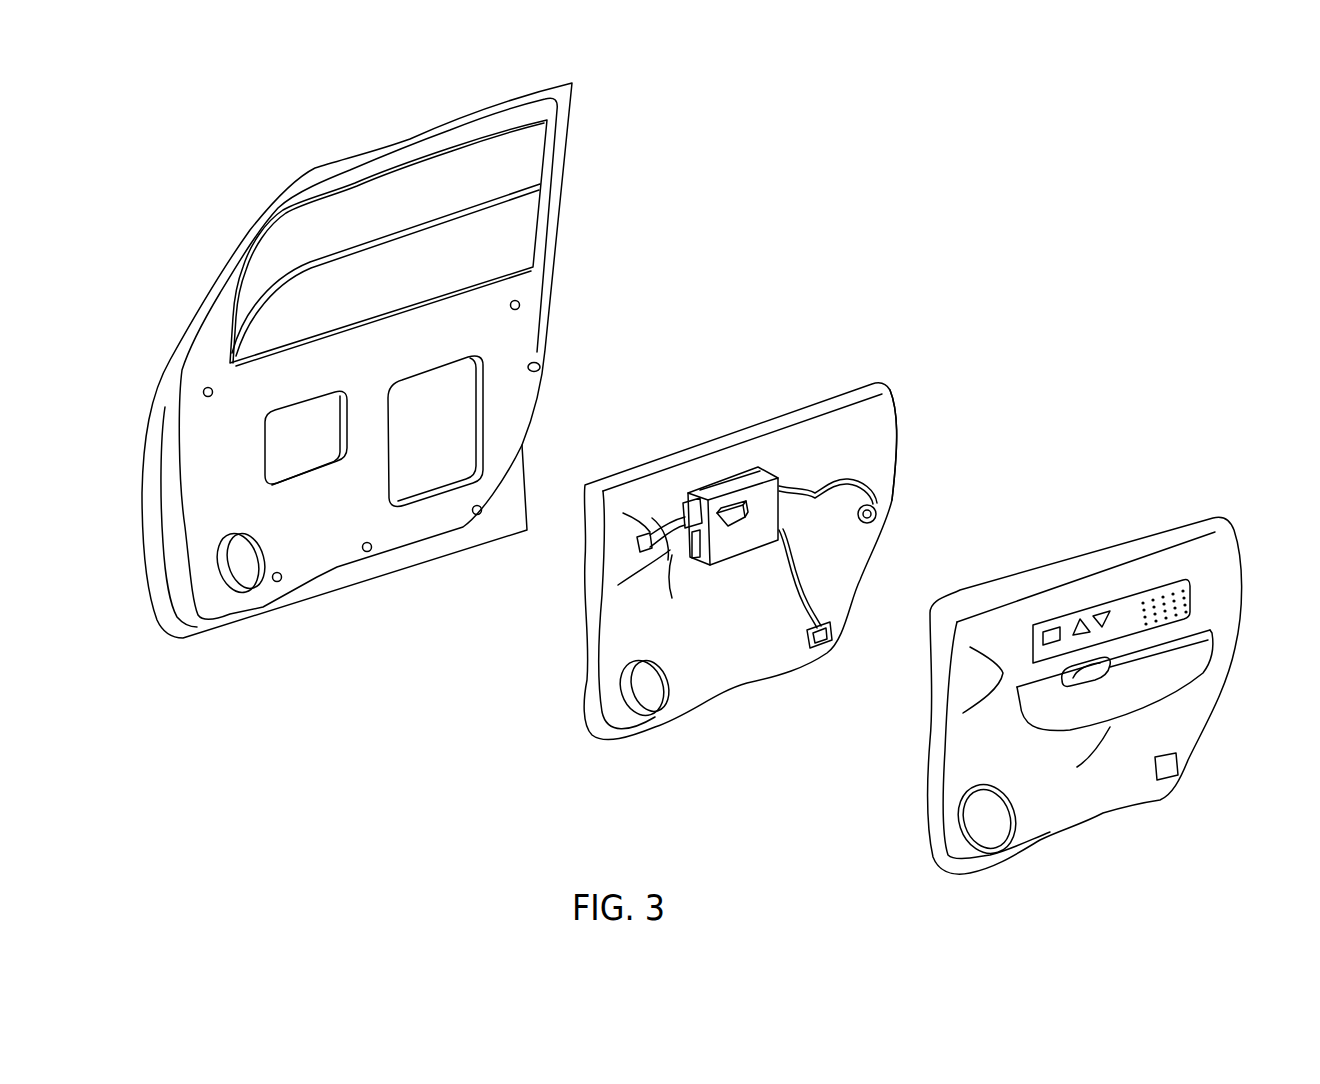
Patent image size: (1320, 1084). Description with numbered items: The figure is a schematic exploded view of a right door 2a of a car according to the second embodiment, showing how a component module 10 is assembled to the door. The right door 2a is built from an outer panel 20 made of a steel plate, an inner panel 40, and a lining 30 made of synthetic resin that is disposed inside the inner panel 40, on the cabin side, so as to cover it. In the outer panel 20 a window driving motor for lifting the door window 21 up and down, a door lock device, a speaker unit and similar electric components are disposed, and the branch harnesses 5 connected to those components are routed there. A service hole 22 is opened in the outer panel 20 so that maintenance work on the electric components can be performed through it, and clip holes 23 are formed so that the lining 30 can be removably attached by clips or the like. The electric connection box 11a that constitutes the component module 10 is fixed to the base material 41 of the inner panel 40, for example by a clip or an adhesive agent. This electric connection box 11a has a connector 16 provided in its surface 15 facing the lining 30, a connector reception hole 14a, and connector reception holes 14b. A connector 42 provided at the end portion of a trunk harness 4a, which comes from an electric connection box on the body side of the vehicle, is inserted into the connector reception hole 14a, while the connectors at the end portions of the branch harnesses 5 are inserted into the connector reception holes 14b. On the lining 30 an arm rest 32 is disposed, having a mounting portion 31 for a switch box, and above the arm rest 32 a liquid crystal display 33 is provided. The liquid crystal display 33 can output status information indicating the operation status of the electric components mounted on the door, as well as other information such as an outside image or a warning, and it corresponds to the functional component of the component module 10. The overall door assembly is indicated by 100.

The right door 2a is at (394, 768).
The trunk harness 4a is at (686, 560).
The branch harness 5 is at (852, 478).
The component module 10 is at (703, 410).
The electric connection box 11a is at (753, 472).
The connector reception hole 14a is at (684, 503).
The connector reception holes 14b is at (690, 562).
The surface 15 is at (773, 545).
The connector 16 is at (740, 528).
The outer panel 20 is at (580, 199).
The door window 21 is at (358, 242).
The service hole 22 is at (460, 443).
The clip holes 23 is at (205, 388).
The lining 30 is at (1164, 520).
The mounting portion 31 is at (1105, 668).
The arm rest 32 is at (1132, 660).
The liquid crystal display 33 is at (1062, 612).
The inner panel 40 is at (815, 395).
The base material 41 is at (893, 408).
The connector 42 is at (677, 560).
The door assembly 100 is at (1049, 336).